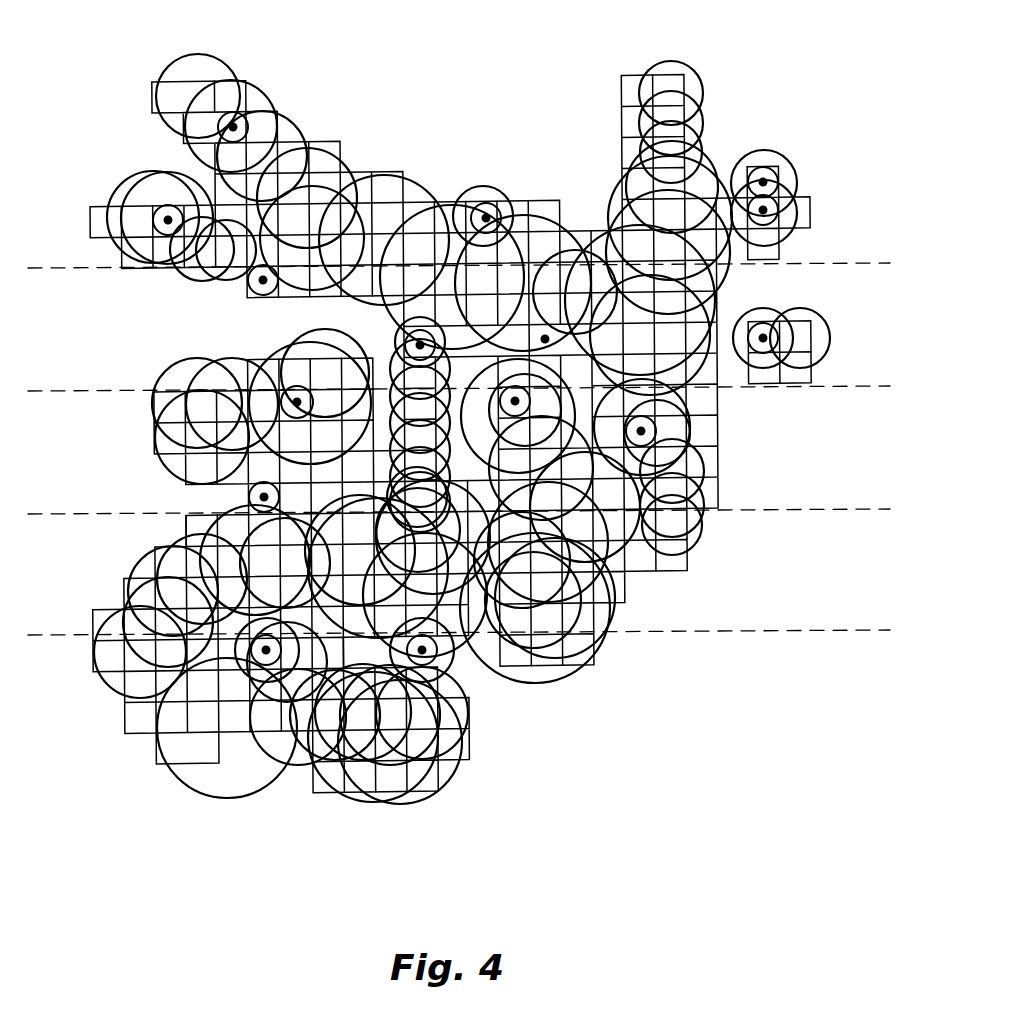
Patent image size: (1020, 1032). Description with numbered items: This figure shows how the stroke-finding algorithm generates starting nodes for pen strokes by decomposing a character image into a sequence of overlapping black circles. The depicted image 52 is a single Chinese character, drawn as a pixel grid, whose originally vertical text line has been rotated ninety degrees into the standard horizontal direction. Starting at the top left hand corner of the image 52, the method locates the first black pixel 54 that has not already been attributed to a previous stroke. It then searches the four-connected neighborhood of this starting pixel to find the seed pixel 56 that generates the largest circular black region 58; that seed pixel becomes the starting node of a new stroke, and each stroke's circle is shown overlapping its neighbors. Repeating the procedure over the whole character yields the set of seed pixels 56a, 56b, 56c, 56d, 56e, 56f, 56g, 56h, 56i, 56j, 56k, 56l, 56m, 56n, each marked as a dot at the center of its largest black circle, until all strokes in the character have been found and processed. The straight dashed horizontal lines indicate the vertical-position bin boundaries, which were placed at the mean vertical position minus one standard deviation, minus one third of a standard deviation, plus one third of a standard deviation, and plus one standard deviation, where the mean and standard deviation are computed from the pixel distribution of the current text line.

The image 52 is at (455, 44).
The first black pixel 54 is at (178, 86).
The seed pixel 56 is at (233, 125).
The largest circular black region 58 is at (266, 90).
The seed pixel 56a is at (168, 218).
The seed pixel 56b is at (263, 283).
The seed pixel 56c is at (486, 216).
The seed pixel 56d is at (764, 180).
The seed pixel 56e is at (764, 212).
The seed pixel 56f is at (418, 343).
The seed pixel 56g is at (545, 337).
The seed pixel 56h is at (764, 340).
The seed pixel 56i is at (299, 402).
The seed pixel 56j is at (643, 431).
The seed pixel 56k is at (513, 403).
The seed pixel 56l is at (262, 497).
The seed pixel 56m is at (265, 652).
The seed pixel 56n is at (424, 652).